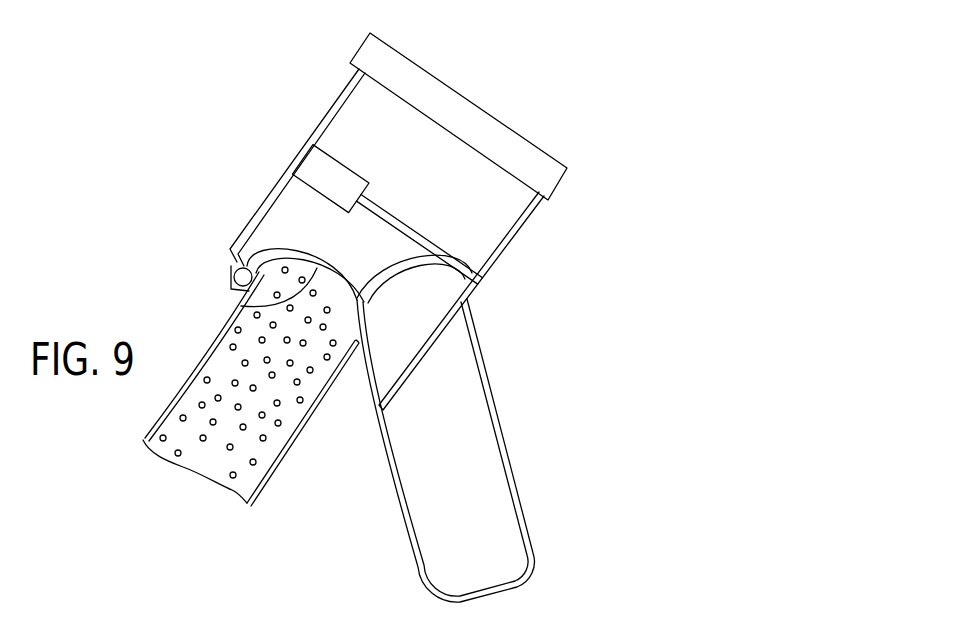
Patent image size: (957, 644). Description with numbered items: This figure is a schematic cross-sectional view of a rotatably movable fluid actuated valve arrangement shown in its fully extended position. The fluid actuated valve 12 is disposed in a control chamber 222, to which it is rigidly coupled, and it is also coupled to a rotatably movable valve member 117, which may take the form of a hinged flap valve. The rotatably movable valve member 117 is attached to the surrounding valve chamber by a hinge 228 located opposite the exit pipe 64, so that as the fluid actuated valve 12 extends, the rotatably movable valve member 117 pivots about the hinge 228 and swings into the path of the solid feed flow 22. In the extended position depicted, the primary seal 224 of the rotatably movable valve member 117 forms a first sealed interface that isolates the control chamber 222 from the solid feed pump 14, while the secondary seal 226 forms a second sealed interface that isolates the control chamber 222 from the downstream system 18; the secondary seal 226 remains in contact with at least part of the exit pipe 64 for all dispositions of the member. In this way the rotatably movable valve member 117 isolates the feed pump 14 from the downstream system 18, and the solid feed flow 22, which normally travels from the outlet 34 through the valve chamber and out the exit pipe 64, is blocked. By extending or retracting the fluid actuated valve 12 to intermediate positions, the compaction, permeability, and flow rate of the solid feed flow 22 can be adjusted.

The fluid actuated valve 12 is at (341, 165).
The solid feed pump 14 is at (222, 470).
The downstream system 18 is at (487, 566).
The solid feed flow 22 is at (220, 366).
The outlet 34 is at (295, 430).
The exit pipe 64 is at (503, 423).
The rotatably movable valve member 117 is at (300, 247).
The control chamber 222 is at (474, 103).
The primary seal 224 is at (241, 306).
The secondary seal 226 is at (455, 315).
The hinge 228 is at (234, 270).